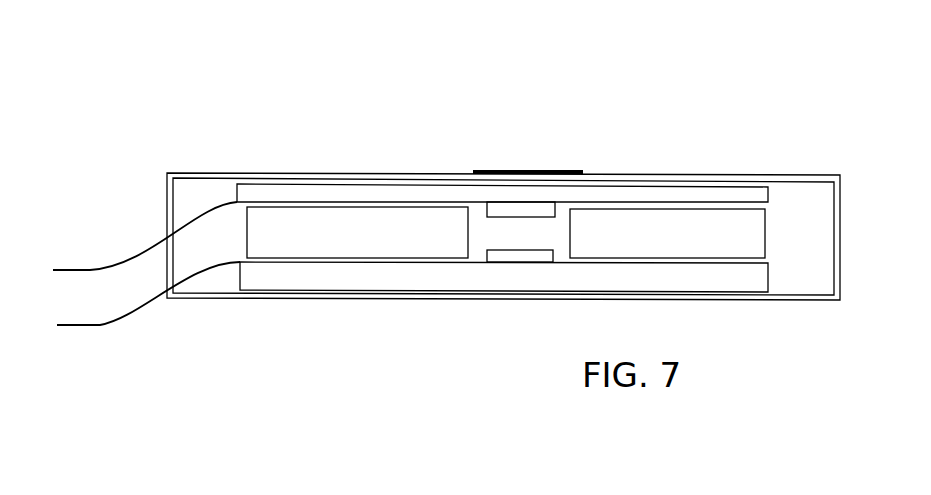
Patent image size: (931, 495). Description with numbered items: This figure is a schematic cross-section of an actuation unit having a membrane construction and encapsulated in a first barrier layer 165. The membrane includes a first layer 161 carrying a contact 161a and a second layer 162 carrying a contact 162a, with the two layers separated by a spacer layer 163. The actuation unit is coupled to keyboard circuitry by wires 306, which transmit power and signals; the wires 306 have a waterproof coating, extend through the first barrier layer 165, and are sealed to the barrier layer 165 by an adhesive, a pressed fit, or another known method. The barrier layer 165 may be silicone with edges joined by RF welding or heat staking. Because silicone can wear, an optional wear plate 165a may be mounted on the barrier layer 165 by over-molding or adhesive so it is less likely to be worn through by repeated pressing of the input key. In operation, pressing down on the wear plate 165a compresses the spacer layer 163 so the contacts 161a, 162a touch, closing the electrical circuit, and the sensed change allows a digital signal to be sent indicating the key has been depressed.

The first layer 161 is at (338, 275).
The contact 161a is at (500, 255).
The second layer 162 is at (672, 193).
The contact 162a is at (490, 207).
The spacer layer 163 is at (313, 220).
The first barrier layer 165 is at (225, 293).
The wear plate 165a is at (525, 170).
The wires 306 is at (118, 258).